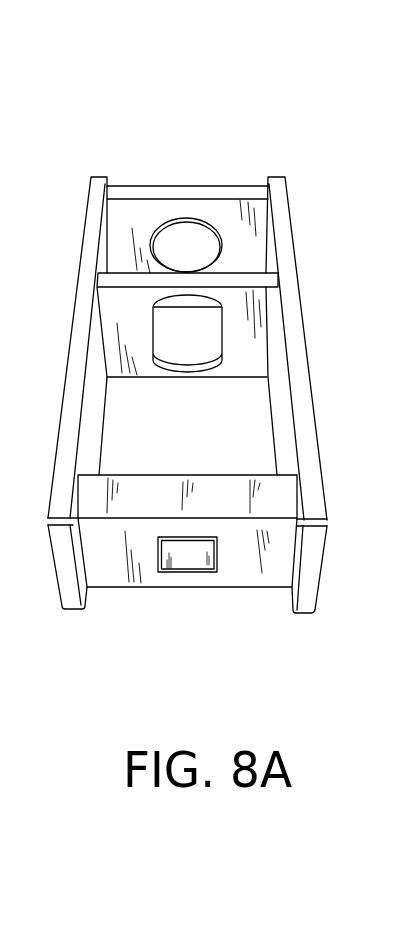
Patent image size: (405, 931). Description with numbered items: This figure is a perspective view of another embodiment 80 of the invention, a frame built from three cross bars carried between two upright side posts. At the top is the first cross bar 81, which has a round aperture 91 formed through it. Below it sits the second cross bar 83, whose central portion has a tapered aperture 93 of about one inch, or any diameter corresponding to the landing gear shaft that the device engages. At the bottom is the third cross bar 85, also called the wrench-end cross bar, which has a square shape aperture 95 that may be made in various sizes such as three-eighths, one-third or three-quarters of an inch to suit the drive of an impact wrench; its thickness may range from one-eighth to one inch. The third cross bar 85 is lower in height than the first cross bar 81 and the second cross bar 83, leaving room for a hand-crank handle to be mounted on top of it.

The embodiment 80 is at (294, 133).
The first cross bar 81 is at (133, 193).
The second cross bar 83 is at (135, 277).
The third cross bar (wrench-end-cross-bar) 85 is at (112, 549).
The round aperture 91 is at (192, 242).
The tapered aperture 93 is at (187, 335).
The square shape aperture 95 is at (182, 555).